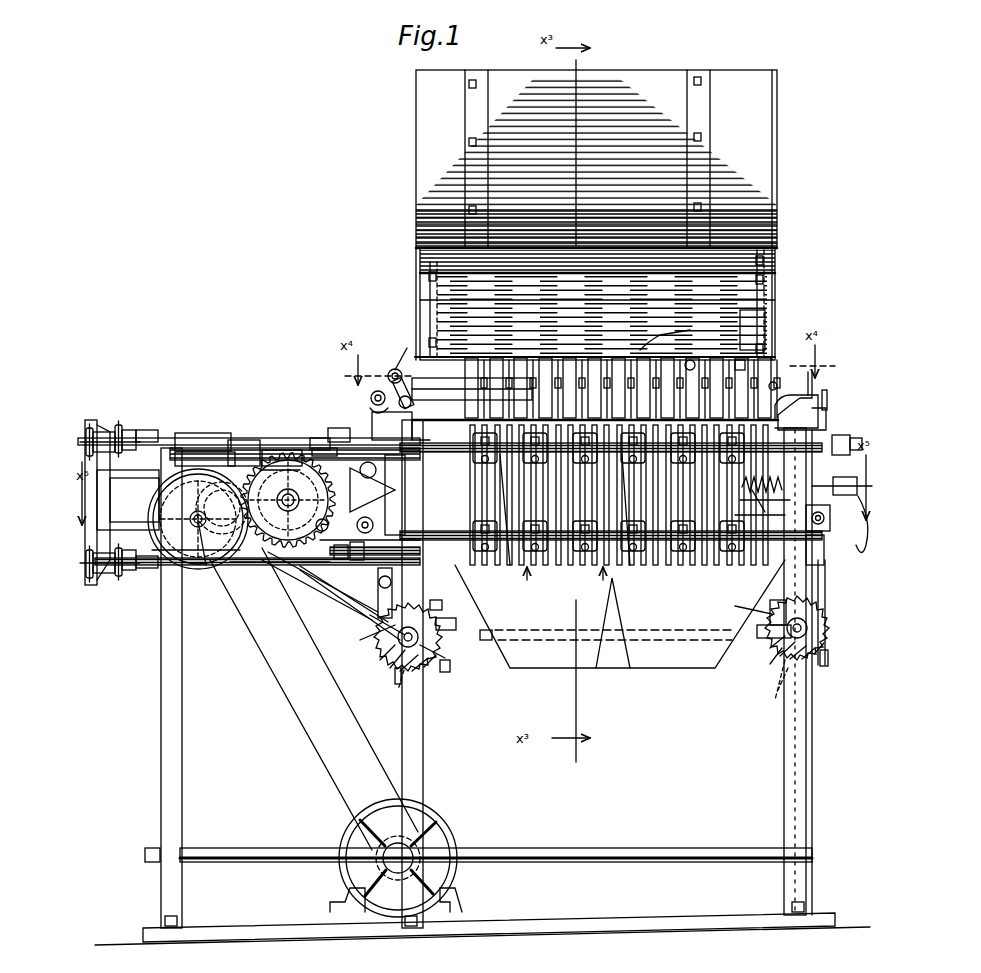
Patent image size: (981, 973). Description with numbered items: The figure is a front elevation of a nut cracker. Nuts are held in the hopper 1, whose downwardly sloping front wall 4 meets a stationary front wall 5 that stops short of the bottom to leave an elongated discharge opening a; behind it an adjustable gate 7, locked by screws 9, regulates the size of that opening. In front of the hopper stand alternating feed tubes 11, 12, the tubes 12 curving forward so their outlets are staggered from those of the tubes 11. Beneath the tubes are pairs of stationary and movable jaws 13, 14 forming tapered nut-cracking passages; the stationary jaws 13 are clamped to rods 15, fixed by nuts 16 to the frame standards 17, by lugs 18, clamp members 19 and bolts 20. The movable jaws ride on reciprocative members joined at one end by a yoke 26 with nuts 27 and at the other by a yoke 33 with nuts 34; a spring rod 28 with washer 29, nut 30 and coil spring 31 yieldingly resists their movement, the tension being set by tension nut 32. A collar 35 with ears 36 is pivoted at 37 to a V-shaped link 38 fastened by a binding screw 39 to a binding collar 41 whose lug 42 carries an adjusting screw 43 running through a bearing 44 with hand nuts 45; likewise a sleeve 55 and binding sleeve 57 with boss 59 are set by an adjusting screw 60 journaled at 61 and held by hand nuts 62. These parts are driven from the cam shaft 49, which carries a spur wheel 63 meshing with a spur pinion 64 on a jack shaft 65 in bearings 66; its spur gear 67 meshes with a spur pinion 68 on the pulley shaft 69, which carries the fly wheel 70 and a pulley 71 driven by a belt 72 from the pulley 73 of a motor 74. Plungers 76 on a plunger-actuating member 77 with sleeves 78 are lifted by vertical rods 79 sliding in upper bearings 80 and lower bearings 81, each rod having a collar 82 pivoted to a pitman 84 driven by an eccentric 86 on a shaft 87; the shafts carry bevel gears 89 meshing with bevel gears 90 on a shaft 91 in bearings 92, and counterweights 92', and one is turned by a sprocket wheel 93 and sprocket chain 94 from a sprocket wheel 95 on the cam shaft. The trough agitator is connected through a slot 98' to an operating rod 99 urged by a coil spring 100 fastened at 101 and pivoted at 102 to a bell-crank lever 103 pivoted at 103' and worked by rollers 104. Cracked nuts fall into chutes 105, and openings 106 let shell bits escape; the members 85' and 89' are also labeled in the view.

The nut hopper 1 is at (780, 116).
The sloping front wall 4 is at (735, 176).
The stationary front wall 5 is at (772, 256).
The adjustable gate 7 is at (455, 310).
The screws 9 is at (432, 276).
The elongated opening a is at (765, 320).
The feed tubes 11 is at (520, 362).
The feed tubes 12 is at (473, 362).
The stationary jaws 13 is at (537, 563).
The movable jaws 14 is at (515, 562).
The rods 15 is at (440, 452).
The nuts 16 is at (158, 438).
The frame standards 17 is at (160, 672).
The lugs 18 is at (686, 562).
The clamp member 19 is at (718, 560).
The bolts 20 is at (745, 447).
The yoke 26 is at (842, 435).
The nuts 27 is at (861, 438).
The spring rod 28 is at (798, 671).
The washer 29 is at (752, 482).
The nut 30 is at (760, 517).
The coil spring 31 is at (765, 501).
The tension nut 32 is at (850, 500).
The yoke 33 is at (128, 500).
The nuts 34 is at (133, 432).
The collar 35 is at (339, 431).
The ears 36 is at (382, 505).
The pivot 37 is at (387, 495).
The V-shaped link 38 is at (372, 490).
The binding screw 39 is at (386, 519).
The binding collar 41 is at (333, 561).
The lug 42 is at (351, 564).
The adjusting screw 43 is at (280, 571).
The bearing 44 is at (92, 586).
The hand nuts 45 is at (86, 575).
The cam shaft 49 is at (290, 470).
The sleeve 55 is at (350, 605).
The binding sleeve 57 is at (312, 438).
The boss 59 is at (322, 448).
The adjusting screw 60 is at (205, 452).
The bearing 61 is at (102, 430).
The hand nuts 62 is at (89, 426).
The spur wheel 63 is at (285, 548).
The spur pinion 64 is at (238, 440).
The jack shaft 65 is at (222, 508).
The bearings 66 is at (265, 450).
The spur gear 67 is at (188, 433).
The spur pinion 68 is at (150, 568).
The pulley shaft 69 is at (200, 565).
The fly wheel 70 is at (205, 568).
The pulley 71 is at (220, 556).
The belt 72 is at (308, 750).
The motor pulley 73 is at (385, 862).
The motor 74 is at (452, 824).
The plungers 76 is at (412, 548).
The plunger-actuating member 77 is at (442, 512).
The sleeves 78 is at (824, 532).
The vertical rods 79 is at (395, 675).
The upper bearings 80 is at (805, 410).
The lower bearings 81 is at (822, 565).
The collar 82 is at (780, 608).
The pitman 84 is at (378, 600).
The link 85' is at (578, 698).
The eccentric 86 is at (760, 612).
The shafts 87 is at (400, 642).
The bevel gears 89 is at (446, 605).
The link 89' is at (763, 693).
The bevel gears 90 is at (772, 662).
The shaft 91 is at (492, 652).
The bearings 92 is at (613, 640).
The counterweights 92' is at (647, 679).
The sprocket wheel 93 is at (362, 637).
The sprocket chain 94 is at (330, 594).
The sprocket wheel 95 is at (340, 594).
The slot 98' is at (660, 339).
The operating rod 99 is at (395, 368).
The coil spring 100 is at (690, 360).
The fastening point 101 is at (765, 366).
The pivot 102 is at (402, 378).
The bell-crank lever 103 is at (375, 397).
The pivot 103' is at (595, 430).
The rollers 104 is at (374, 404).
The chutes 105 is at (670, 648).
The openings 106 is at (782, 385).